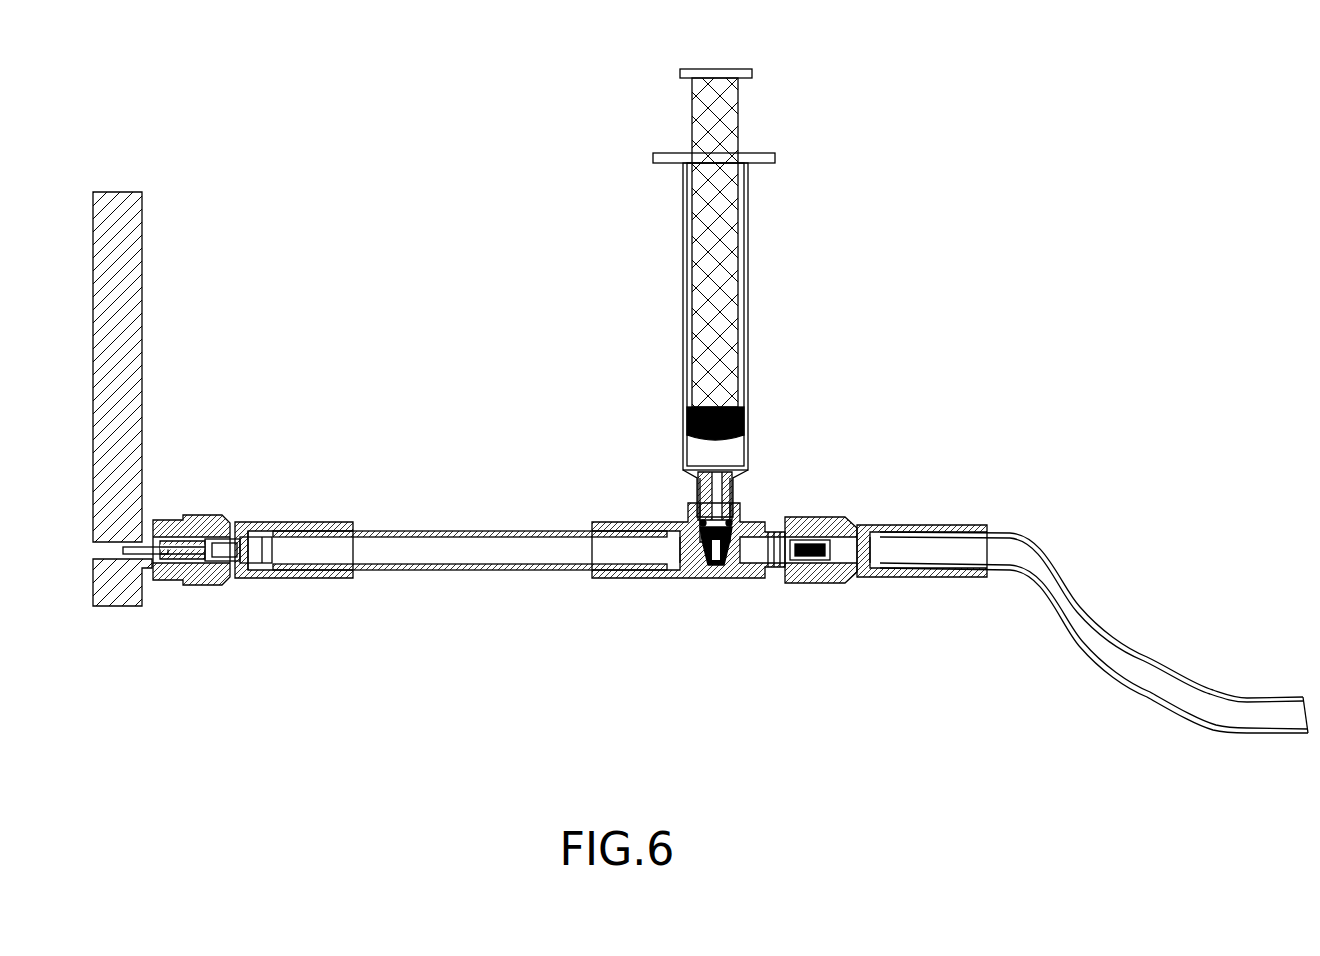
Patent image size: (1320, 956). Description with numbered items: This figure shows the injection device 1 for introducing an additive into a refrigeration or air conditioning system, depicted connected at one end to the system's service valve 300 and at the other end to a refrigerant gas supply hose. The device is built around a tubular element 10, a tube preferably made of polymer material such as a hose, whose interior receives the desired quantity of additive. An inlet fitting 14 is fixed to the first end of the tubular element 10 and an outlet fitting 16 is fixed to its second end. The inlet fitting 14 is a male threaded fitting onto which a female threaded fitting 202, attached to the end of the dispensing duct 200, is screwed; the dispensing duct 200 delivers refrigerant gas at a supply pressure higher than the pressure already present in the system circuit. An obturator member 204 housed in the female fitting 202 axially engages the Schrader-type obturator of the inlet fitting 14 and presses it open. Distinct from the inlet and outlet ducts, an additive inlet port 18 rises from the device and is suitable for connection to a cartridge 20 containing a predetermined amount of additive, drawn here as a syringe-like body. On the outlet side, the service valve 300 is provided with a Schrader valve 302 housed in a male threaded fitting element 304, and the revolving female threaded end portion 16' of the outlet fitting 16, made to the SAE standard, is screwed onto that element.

The injection device 1 is at (463, 255).
The tubular element 10 is at (510, 530).
The inlet fitting 14 is at (770, 602).
The outlet fitting 16 is at (293, 605).
The female threaded end portion 16' is at (265, 464).
The additive inlet port 18 is at (750, 511).
The cartridge 20 is at (778, 293).
The dispensing duct 200 is at (1133, 610).
The female threaded fitting 202 is at (835, 586).
The obturator member 204 is at (860, 523).
The service valve 300 is at (153, 592).
The Schrader valve 302 is at (152, 513).
The male threaded fitting element 304 is at (170, 584).